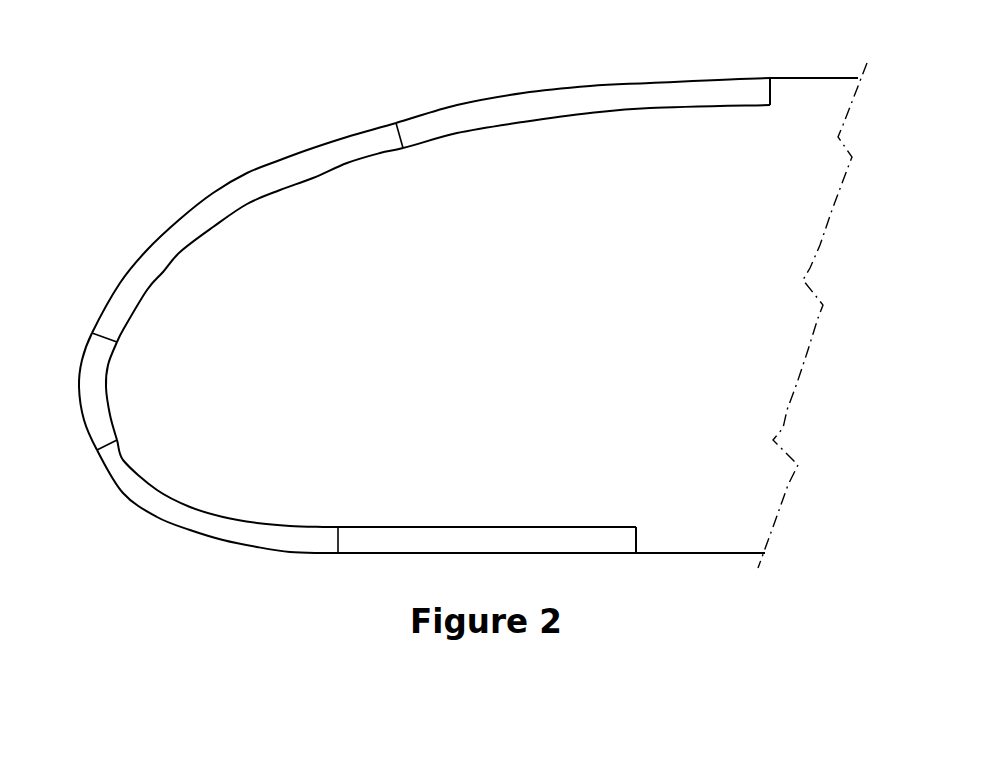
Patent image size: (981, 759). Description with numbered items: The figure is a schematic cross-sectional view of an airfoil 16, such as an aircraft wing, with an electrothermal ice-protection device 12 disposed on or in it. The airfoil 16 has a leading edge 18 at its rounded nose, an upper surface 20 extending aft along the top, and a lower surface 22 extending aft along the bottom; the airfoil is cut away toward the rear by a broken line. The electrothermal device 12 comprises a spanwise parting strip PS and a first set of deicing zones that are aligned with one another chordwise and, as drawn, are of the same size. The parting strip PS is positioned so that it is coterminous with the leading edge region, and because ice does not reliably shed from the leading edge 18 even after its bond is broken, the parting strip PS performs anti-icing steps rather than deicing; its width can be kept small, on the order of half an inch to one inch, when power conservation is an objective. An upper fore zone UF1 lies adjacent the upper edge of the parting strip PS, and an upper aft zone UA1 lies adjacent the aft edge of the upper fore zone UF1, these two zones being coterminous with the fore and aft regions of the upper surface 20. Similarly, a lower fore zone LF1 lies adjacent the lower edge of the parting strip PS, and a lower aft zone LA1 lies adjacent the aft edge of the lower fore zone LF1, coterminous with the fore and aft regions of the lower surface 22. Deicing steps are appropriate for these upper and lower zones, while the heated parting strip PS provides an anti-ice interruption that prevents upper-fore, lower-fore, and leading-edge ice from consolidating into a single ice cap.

The electrothermal device 12 is at (746, 76).
The airfoil 16 is at (617, 343).
The leading edge 18 is at (79, 378).
The upper surface 20 is at (813, 78).
The lower surface 22 is at (685, 553).
The parting strip PS is at (95, 398).
The upper fore zone UF1 is at (282, 182).
The upper aft zone UA1 is at (618, 98).
The lower fore zone LF1 is at (240, 527).
The lower aft zone LA1 is at (498, 540).